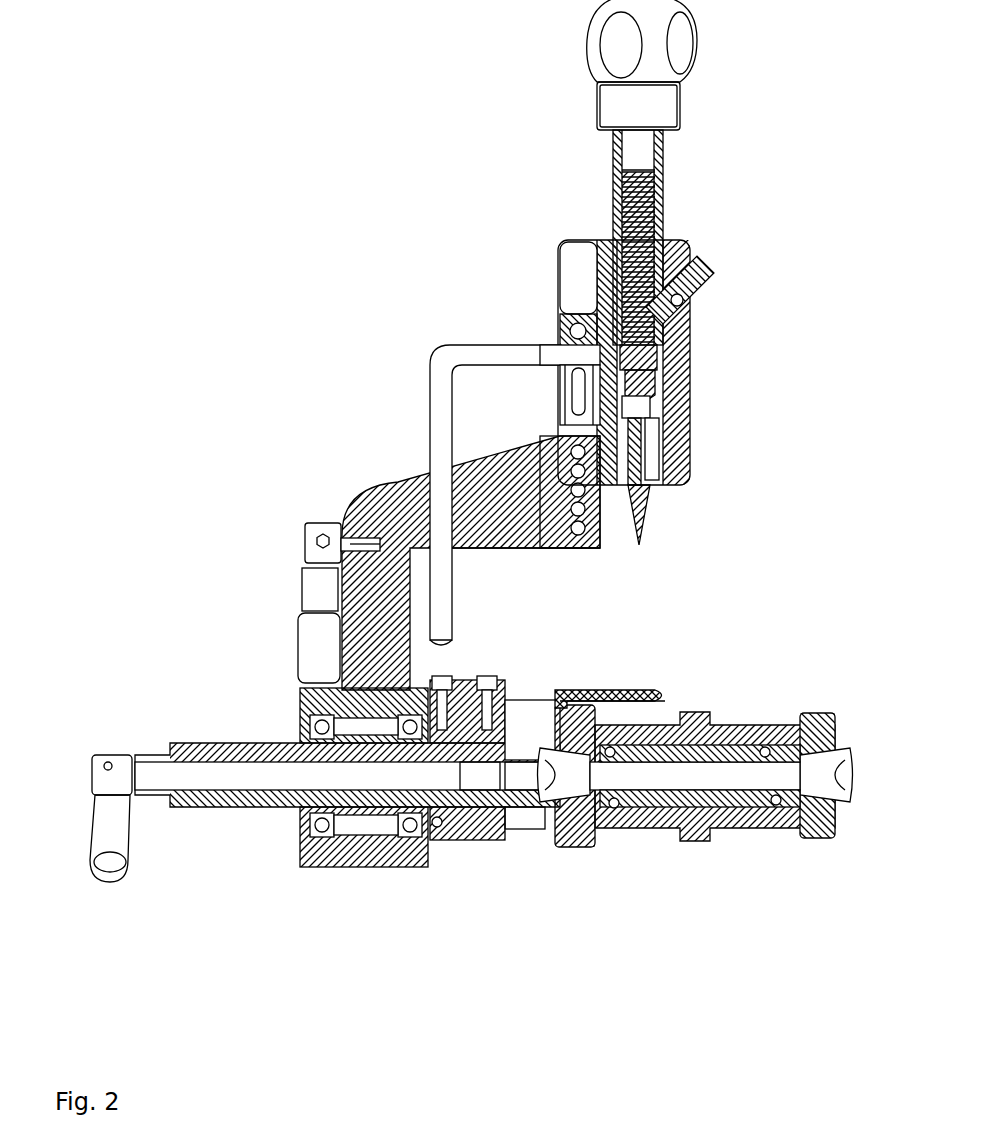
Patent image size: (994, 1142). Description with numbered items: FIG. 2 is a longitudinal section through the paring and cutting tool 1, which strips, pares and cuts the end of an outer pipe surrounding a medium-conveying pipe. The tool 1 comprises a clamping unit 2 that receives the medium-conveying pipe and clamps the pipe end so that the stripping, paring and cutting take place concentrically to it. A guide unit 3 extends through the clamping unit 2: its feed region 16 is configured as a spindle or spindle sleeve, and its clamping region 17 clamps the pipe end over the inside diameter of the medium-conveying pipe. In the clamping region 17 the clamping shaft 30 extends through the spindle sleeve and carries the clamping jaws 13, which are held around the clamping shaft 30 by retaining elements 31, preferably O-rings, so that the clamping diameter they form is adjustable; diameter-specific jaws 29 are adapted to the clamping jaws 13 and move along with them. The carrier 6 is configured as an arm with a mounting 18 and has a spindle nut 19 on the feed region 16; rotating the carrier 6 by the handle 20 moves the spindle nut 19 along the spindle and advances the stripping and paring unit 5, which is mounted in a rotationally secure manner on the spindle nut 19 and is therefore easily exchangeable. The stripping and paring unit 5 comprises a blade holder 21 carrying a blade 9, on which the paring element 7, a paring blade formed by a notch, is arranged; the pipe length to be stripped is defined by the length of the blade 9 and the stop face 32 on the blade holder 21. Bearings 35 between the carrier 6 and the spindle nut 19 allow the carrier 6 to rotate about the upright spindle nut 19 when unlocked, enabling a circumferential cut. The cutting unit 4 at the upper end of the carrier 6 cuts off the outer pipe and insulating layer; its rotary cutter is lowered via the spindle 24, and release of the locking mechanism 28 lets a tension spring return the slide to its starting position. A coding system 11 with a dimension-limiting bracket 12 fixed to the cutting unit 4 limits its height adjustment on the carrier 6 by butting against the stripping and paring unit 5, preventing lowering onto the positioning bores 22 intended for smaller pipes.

The paring and cutting tool 1 is at (497, 571).
The clamping unit 2 is at (497, 571).
The guide unit 3 is at (497, 571).
The cutting unit 4 is at (497, 571).
The stripping and paring unit 5 is at (528, 672).
The carrier 6 is at (497, 571).
The paring element 7 is at (637, 688).
The blade 9 is at (577, 688).
The coding system 11 is at (497, 571).
The dimension-limiting bracket 12 is at (443, 452).
The clamping jaws 13 is at (688, 797).
The feed region 16 is at (293, 742).
The clamping region 17 is at (762, 748).
The mounting 18 is at (497, 571).
The spindle nut 19 is at (370, 810).
The handle 20 is at (317, 580).
The blade holder 21 is at (483, 813).
The positioning bores 22 is at (576, 484).
The spindle 24 is at (633, 222).
The locking mechanism 28 is at (680, 300).
The diameter-specific jaws 29 is at (622, 813).
The clamping shaft 30 is at (257, 777).
The retaining elements 31 is at (777, 805).
The stop face 32 is at (508, 825).
The bearings 35 is at (310, 832).